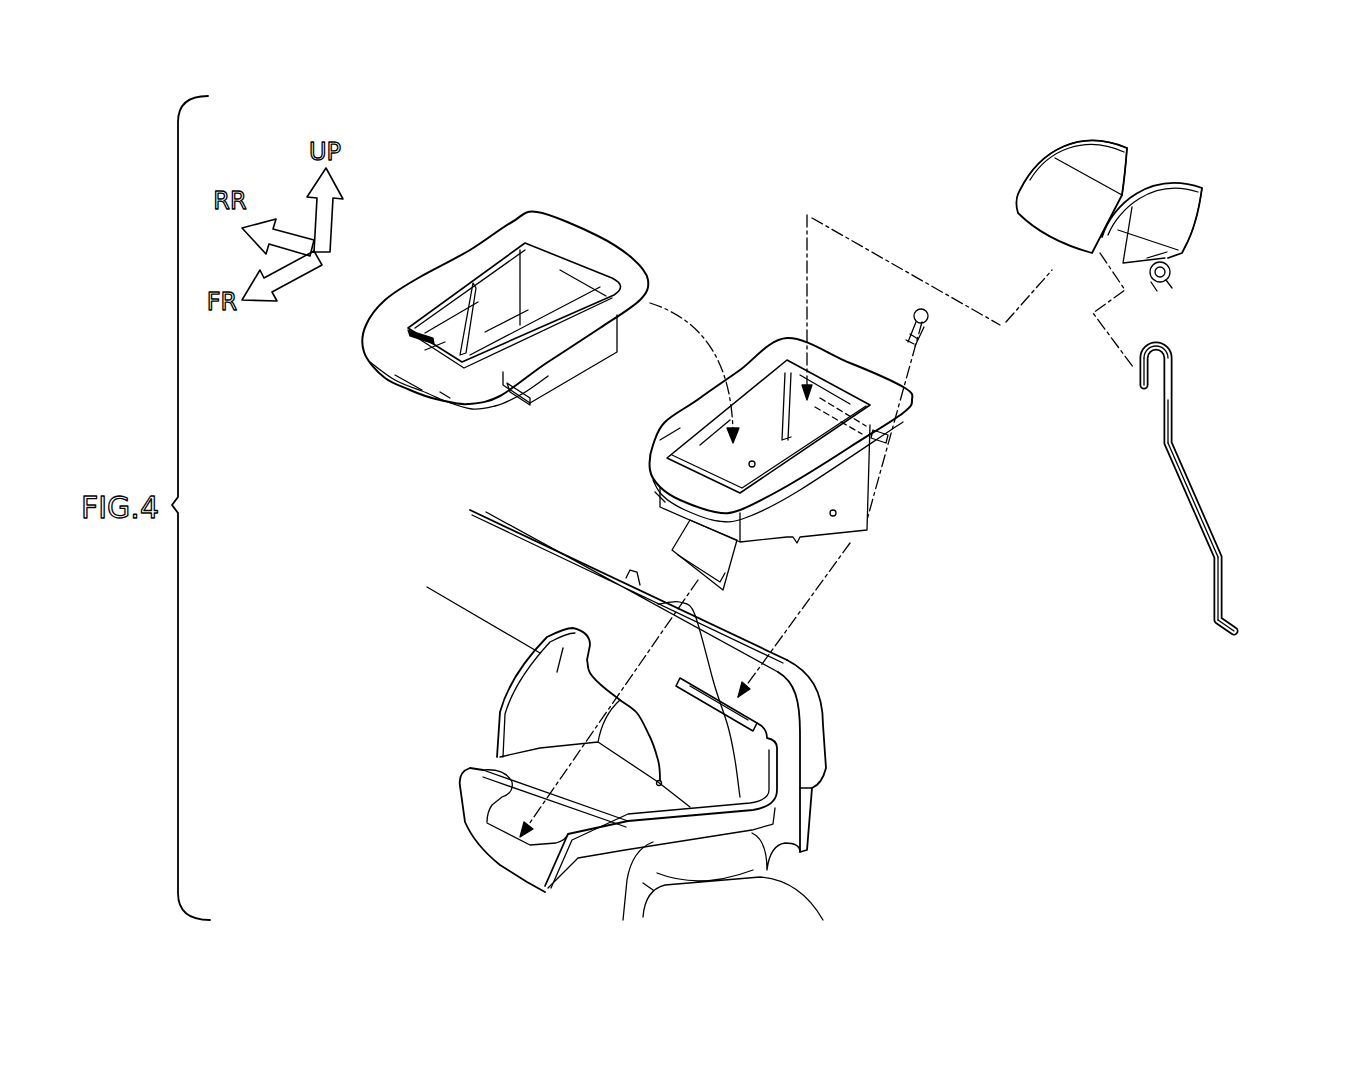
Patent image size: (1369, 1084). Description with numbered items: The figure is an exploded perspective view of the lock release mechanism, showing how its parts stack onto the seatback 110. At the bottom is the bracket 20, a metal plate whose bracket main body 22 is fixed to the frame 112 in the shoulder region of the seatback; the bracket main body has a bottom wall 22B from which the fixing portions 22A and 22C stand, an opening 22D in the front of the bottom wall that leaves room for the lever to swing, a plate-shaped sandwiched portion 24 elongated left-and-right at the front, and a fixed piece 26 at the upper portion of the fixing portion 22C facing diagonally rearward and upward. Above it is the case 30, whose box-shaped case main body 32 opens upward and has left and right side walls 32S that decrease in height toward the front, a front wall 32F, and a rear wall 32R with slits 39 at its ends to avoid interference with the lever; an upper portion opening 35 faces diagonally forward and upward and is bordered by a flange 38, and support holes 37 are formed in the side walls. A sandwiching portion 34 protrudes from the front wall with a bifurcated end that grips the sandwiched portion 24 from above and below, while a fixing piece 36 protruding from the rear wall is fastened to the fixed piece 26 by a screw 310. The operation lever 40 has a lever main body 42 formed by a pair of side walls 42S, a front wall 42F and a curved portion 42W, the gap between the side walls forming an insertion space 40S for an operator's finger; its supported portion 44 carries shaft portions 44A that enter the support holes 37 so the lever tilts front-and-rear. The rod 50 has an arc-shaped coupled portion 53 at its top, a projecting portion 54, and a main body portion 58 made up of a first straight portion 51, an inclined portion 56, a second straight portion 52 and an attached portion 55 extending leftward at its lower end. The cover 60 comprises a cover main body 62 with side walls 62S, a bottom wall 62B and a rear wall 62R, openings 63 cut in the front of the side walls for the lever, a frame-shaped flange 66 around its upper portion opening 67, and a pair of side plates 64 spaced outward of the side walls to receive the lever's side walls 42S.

The bracket 20 is at (636, 688).
The bracket main body 22 is at (635, 714).
The fixing portion 22A is at (560, 660).
The bottom wall 22B is at (540, 765).
The fixing portion 22C is at (748, 772).
The opening 22D is at (470, 777).
The sandwiched portion 24 is at (505, 855).
The fixed piece 26 is at (770, 705).
The case 30 is at (823, 409).
The case main body 32 is at (880, 487).
The front wall 32F is at (655, 498).
The rear wall 32R is at (828, 393).
The side wall 32S is at (660, 413).
The sandwiching portion 34 is at (685, 525).
The upper portion opening 35 is at (703, 450).
The fixing piece 36 is at (893, 438).
The support hole 37 is at (752, 461).
The flange 38 is at (745, 375).
The slit 39 is at (790, 393).
The operation lever 40 is at (1088, 230).
The insertion space 40S is at (1093, 160).
The lever main body 42 is at (1098, 187).
The front wall 42F is at (1115, 233).
The side wall 42S is at (1125, 150).
The curved portion 42W is at (1030, 200).
The supported portion 44 is at (1188, 296).
The shaft portion 44A is at (1170, 278).
The rod 50 is at (1206, 498).
The first straight portion 51 is at (1175, 420).
The second straight portion 52 is at (1222, 565).
The coupled portion 53 is at (1165, 345).
The projecting portion 54 is at (1140, 373).
The attached portion 55 is at (1252, 600).
The inclined portion 56 is at (1200, 493).
The main body portion 58 is at (1238, 488).
The cover 60 is at (492, 298).
The cover main body 62 is at (568, 242).
The bottom wall 62B is at (445, 397).
The rear wall 62R is at (600, 285).
The side wall 62S is at (505, 258).
The opening 63 is at (460, 295).
The side plate 64 is at (437, 313).
The flange 66 is at (395, 375).
The upper portion opening 67 is at (435, 348).
The seatback 110 is at (540, 520).
The frame 112 is at (455, 600).
The screw 310 is at (905, 310).